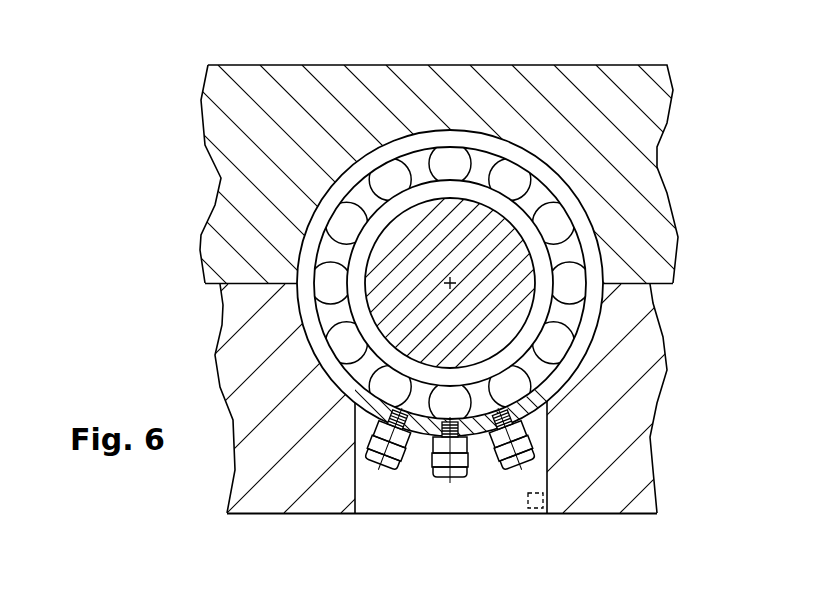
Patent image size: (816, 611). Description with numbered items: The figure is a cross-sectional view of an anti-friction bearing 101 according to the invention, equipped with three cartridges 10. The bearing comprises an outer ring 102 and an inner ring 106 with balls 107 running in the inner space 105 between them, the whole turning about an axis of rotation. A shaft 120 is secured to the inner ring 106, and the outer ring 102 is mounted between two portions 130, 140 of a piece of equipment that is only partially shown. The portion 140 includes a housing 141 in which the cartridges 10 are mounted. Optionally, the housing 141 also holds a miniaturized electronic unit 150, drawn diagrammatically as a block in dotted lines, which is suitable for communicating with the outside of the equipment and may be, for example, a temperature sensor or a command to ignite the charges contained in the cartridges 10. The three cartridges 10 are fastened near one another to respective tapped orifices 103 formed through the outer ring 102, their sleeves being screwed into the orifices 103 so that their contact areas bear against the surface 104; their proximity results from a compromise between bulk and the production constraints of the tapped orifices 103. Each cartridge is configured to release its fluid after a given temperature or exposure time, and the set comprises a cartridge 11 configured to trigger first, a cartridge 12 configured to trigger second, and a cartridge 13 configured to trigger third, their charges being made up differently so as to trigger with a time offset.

The cartridge 10 is at (518, 549).
The cartridge configured to trigger first 11 is at (393, 462).
The cartridge configured to trigger second 12 is at (442, 470).
The cartridge configured to trigger third 13 is at (507, 462).
The anti-friction bearing 101 is at (140, 199).
The outer ring 102 is at (570, 370).
The tapped orifice 103 is at (378, 417).
The surface 104 is at (544, 425).
The inner space 105 is at (580, 319).
The inner ring 106 is at (513, 213).
The balls 107 is at (570, 223).
The shaft 120 is at (468, 230).
The portion of a piece of equipment 130 is at (215, 252).
The portion of a piece of equipment 140 is at (233, 303).
The housing 141 is at (382, 515).
The miniaturized electronic unit 150 is at (535, 510).